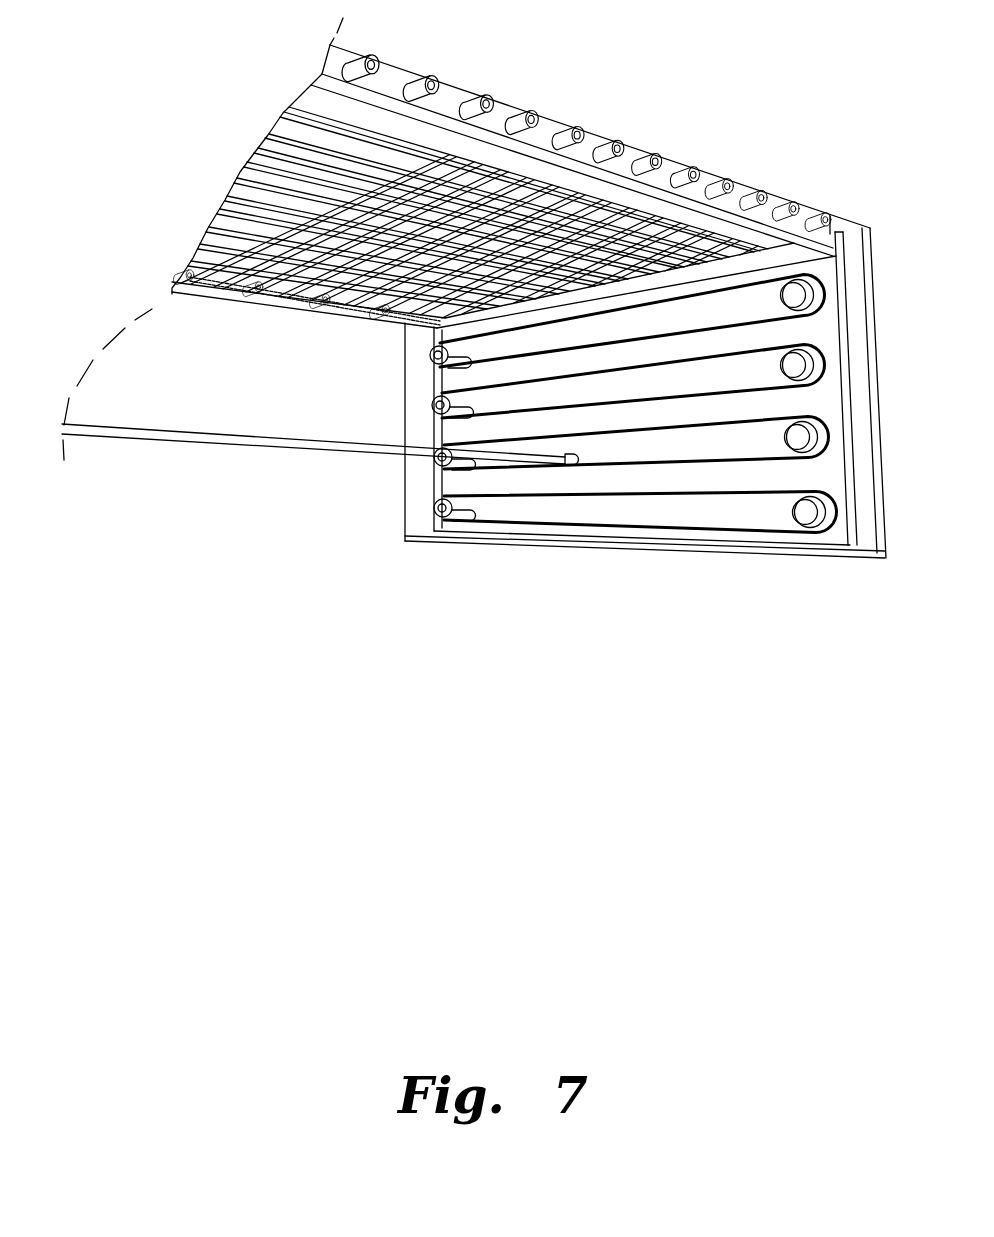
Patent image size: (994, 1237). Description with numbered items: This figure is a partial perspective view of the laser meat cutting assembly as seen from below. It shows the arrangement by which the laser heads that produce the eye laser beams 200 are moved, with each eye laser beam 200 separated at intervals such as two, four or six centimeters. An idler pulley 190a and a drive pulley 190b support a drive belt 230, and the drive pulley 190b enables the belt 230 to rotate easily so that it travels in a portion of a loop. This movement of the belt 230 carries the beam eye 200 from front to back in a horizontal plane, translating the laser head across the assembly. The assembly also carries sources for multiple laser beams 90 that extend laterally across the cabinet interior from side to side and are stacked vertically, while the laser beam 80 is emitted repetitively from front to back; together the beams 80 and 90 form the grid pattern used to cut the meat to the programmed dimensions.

The laser beam 80 is at (335, 258).
The laser beam 90 is at (157, 432).
The eye laser beam 200 is at (427, 367).
The drive belt 230 is at (576, 431).
The idler pulley 190a is at (428, 503).
The drive pulley 190b is at (800, 517).